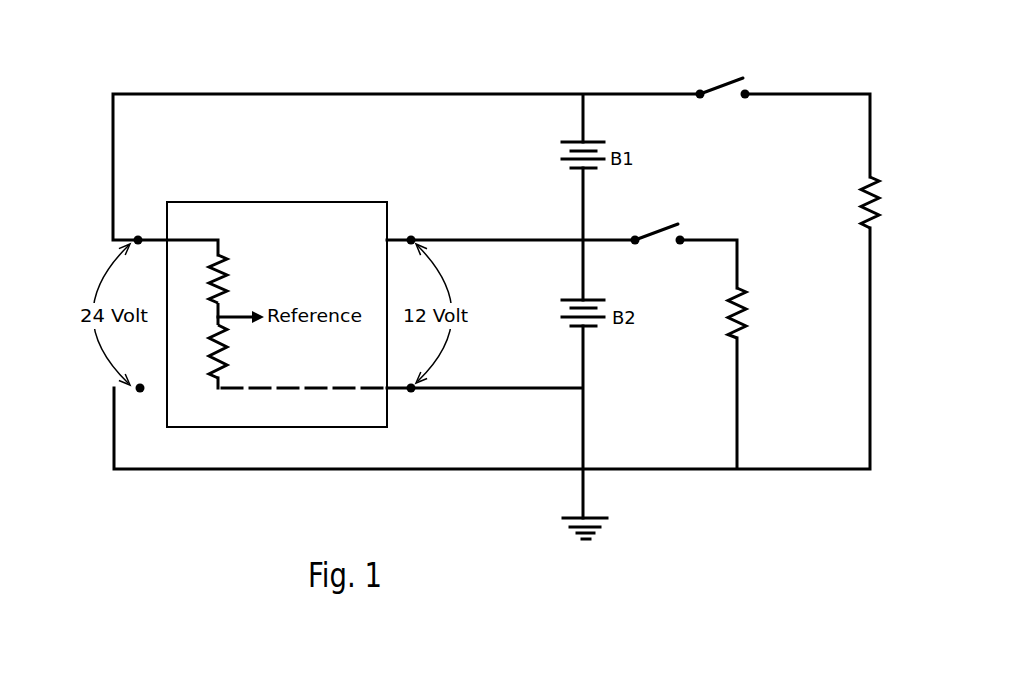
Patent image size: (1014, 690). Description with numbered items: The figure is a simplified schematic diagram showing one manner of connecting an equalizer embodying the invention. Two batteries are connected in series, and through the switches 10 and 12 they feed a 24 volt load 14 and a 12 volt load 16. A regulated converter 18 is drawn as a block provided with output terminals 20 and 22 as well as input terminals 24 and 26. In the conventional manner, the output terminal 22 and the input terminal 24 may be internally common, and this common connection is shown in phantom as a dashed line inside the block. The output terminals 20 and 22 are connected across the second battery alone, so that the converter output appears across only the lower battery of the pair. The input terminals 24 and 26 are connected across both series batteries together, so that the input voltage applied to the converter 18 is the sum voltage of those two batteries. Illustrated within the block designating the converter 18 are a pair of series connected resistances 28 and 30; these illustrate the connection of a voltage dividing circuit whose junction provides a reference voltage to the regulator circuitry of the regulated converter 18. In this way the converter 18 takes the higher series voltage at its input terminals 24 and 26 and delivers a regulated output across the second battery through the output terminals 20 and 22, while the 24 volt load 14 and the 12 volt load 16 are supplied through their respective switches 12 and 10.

The switch 10 is at (660, 225).
The switch 12 is at (727, 82).
The 24 volt load 14 is at (873, 175).
The 12 volt load 16 is at (740, 287).
The regulated converter 18 is at (272, 202).
The output terminal 20 is at (414, 236).
The output terminal 22 is at (418, 386).
The input terminal 24 is at (131, 387).
The input terminal 26 is at (128, 243).
The resistance 28 is at (228, 352).
The resistance 30 is at (230, 279).